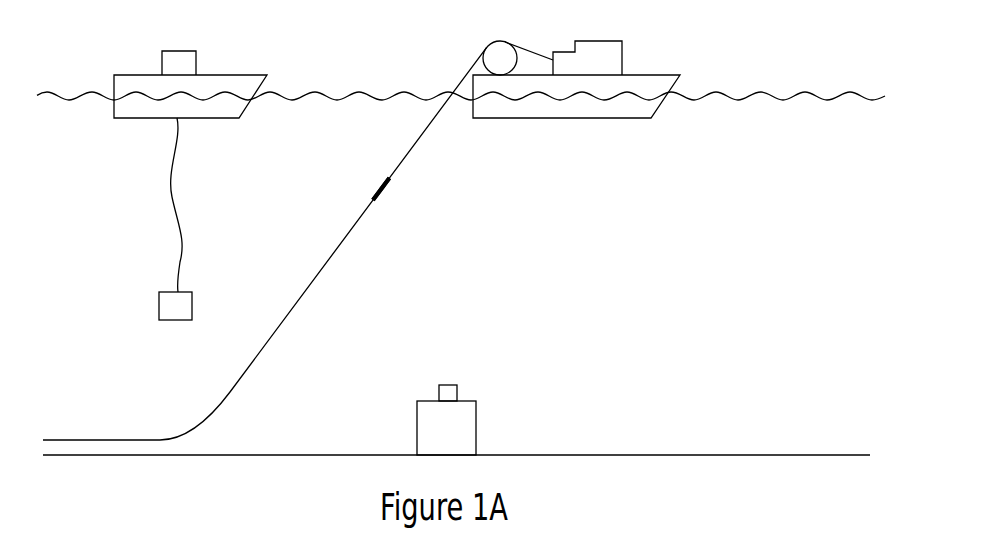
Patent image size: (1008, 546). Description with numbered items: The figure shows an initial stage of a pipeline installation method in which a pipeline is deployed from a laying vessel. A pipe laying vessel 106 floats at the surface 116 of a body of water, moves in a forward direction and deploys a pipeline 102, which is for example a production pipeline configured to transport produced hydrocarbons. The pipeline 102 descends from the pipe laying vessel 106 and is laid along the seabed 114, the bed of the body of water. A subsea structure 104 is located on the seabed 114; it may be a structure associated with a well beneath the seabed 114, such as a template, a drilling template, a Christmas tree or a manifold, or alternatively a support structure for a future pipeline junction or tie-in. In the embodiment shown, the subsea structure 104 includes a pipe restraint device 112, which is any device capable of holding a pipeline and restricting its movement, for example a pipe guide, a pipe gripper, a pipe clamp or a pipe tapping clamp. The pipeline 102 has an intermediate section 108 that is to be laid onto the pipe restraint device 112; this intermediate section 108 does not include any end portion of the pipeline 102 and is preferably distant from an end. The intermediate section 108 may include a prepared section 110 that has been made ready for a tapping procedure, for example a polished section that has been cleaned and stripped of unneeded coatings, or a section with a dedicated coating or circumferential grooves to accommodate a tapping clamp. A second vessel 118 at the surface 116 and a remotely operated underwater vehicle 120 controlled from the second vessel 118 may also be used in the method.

The pipeline 102 is at (316, 277).
The subsea structure 104 is at (460, 424).
The pipe laying vessel 106 is at (655, 75).
The intermediate section 108 is at (378, 193).
The prepared section 110 is at (388, 180).
The pipe restraint device 112 is at (453, 392).
The seabed 114 is at (676, 455).
The surface 116 is at (808, 92).
The second vessel 118 is at (232, 75).
The remotely operated underwater vehicle 120 is at (192, 304).